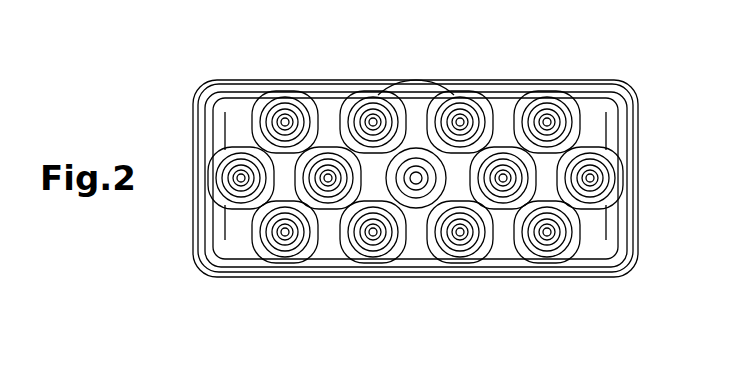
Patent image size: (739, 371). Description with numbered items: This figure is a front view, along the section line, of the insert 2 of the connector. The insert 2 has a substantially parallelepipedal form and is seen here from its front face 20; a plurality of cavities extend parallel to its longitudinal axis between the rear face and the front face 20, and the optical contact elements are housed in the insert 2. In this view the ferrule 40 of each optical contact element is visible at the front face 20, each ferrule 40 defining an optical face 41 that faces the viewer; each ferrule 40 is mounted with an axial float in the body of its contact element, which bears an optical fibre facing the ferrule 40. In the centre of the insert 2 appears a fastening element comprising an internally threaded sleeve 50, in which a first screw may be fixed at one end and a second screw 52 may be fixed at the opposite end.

The insert 2 is at (603, 56).
The front face 20 is at (547, 232).
The ferrule 40 is at (373, 122).
The optical face 41 is at (460, 122).
The internally threaded sleeve 50 is at (416, 178).
The second screw 52 is at (416, 178).